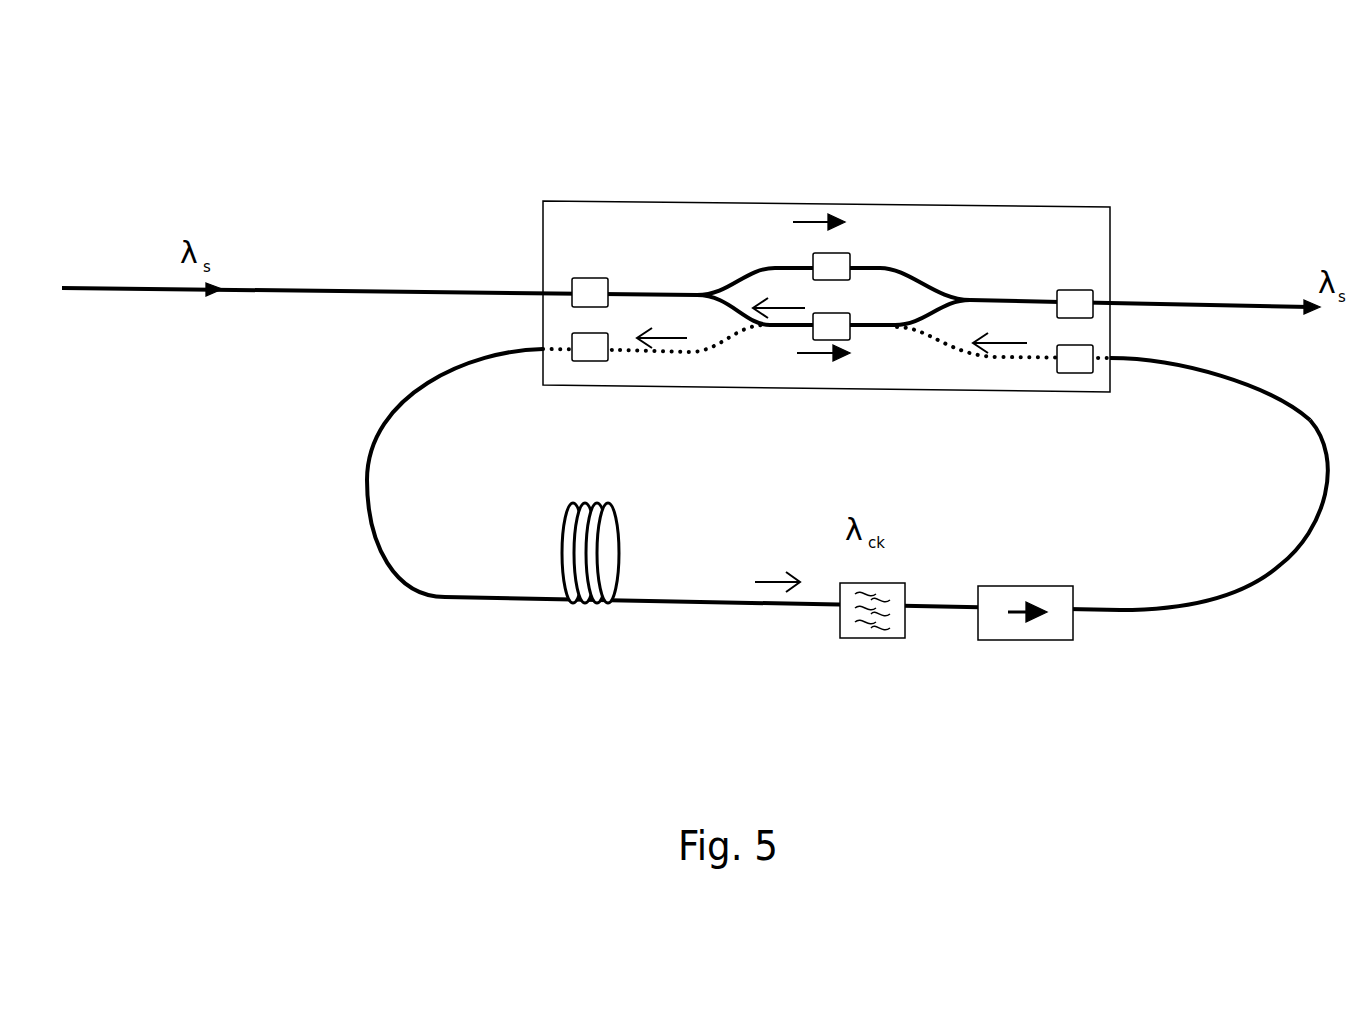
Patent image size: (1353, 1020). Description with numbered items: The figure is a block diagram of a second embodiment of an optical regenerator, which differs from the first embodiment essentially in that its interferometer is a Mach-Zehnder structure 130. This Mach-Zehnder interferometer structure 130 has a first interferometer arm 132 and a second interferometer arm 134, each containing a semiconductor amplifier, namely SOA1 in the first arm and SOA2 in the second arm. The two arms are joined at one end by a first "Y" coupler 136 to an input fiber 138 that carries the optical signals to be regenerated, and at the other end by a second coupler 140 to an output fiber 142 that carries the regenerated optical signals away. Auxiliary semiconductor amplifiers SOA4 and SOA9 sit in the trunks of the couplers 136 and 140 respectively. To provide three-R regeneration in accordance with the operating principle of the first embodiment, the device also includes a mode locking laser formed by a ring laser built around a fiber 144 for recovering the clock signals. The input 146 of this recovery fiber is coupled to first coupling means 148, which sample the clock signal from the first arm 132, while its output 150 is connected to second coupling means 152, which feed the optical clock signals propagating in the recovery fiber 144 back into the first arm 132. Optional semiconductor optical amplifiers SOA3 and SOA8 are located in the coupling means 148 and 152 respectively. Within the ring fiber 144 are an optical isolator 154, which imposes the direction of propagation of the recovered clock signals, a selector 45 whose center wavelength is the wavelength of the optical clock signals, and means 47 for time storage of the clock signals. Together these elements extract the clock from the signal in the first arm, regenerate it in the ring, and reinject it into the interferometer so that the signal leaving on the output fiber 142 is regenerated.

The Mach-Zehnder interferometer structure 130 is at (767, 176).
The first interferometer arm 132 is at (857, 328).
The second interferometer arm 134 is at (872, 270).
The first "Y" coupler 136 is at (688, 275).
The input fiber 138 is at (368, 288).
The second coupler 140 is at (978, 276).
The output fiber 142 is at (1140, 303).
The fiber for recovering the clock signals 144 is at (1108, 617).
The input of the recovery fiber 146 is at (542, 350).
The first coupling means 148 is at (687, 353).
The output of the recovery fiber 150 is at (1117, 360).
The second coupling means 152 is at (1012, 358).
The optical isolator 154 is at (1007, 638).
The selector 45 is at (840, 627).
The means for time storage of the clock signals 47 is at (603, 527).
The semiconductor amplifier SOA1 is at (840, 342).
The semiconductor amplifier SOA2 is at (820, 253).
The optional semiconductor optical amplifier SOA3 is at (598, 361).
The auxiliary semiconductor amplifier SOA4 is at (582, 278).
The optional semiconductor optical amplifier SOA8 is at (1077, 375).
The auxiliary semiconductor amplifier SOA9 is at (1079, 290).